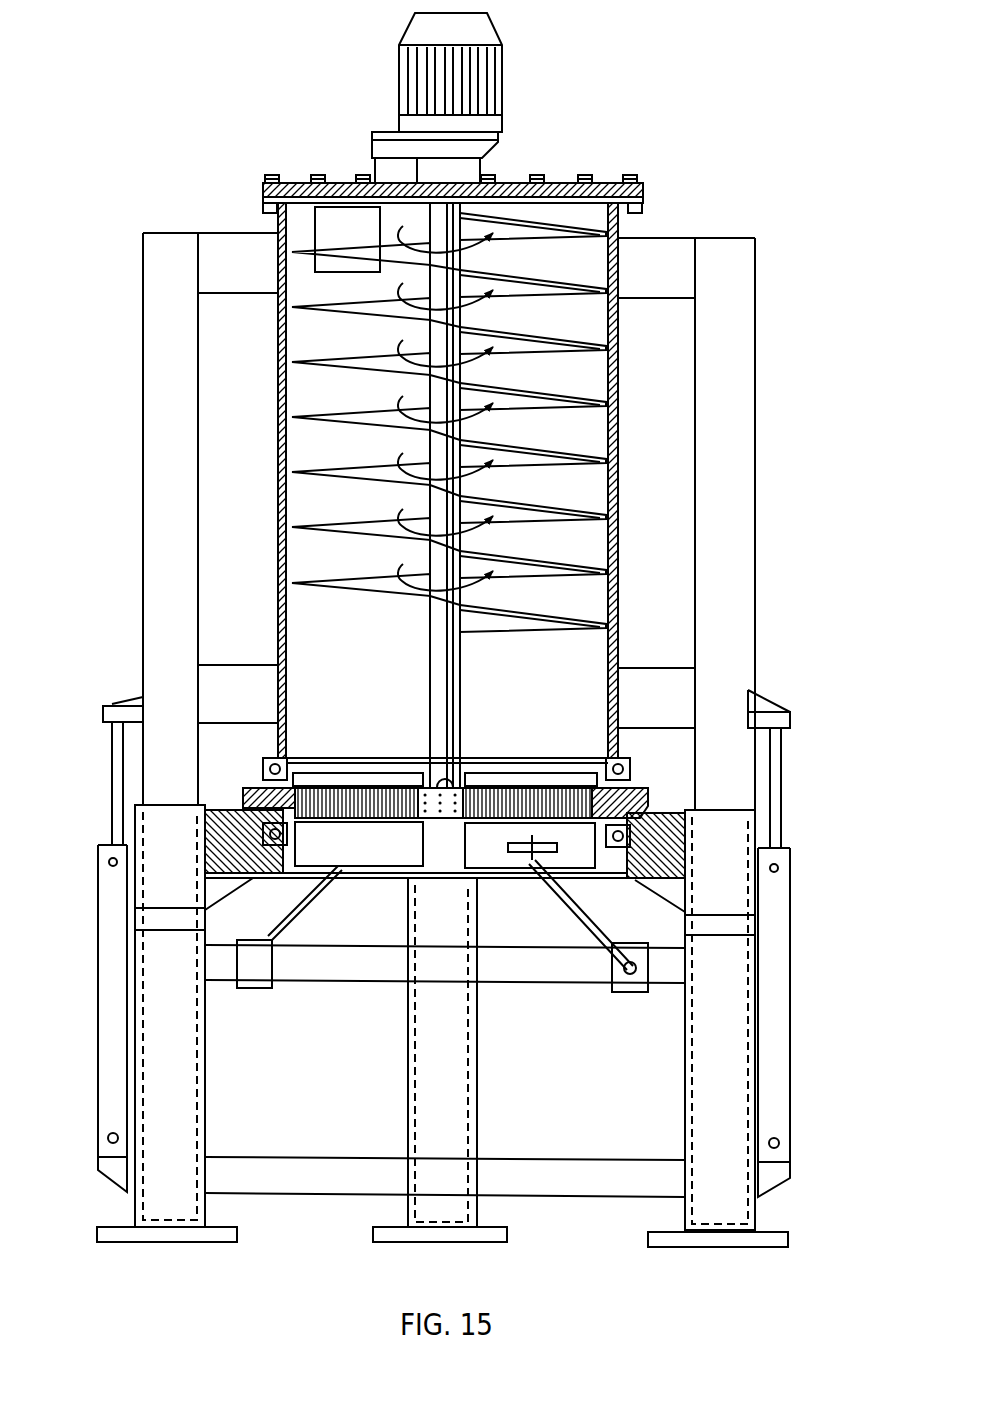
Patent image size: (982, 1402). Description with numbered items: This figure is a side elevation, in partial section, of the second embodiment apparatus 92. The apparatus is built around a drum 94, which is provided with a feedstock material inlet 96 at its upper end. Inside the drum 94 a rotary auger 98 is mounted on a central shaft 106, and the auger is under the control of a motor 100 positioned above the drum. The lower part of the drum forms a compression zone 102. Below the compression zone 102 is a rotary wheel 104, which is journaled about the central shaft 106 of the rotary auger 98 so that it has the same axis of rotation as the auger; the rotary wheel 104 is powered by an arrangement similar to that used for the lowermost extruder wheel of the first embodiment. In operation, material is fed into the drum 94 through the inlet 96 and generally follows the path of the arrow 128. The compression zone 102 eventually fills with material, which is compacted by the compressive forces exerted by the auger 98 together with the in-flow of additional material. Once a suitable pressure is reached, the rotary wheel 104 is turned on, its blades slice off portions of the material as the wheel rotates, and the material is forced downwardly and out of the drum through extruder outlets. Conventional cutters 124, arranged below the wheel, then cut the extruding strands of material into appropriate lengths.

The second embodiment apparatus 92 is at (212, 143).
The drum 94 is at (562, 190).
The feedstock material inlet 96 is at (355, 223).
The rotary auger 98 is at (318, 596).
The motor 100 is at (467, 27).
The compression zone 102 is at (553, 720).
The rotary wheel 104 is at (645, 797).
The central shaft 106 is at (440, 742).
The cutters 124 is at (573, 915).
The arrow 128 is at (412, 612).